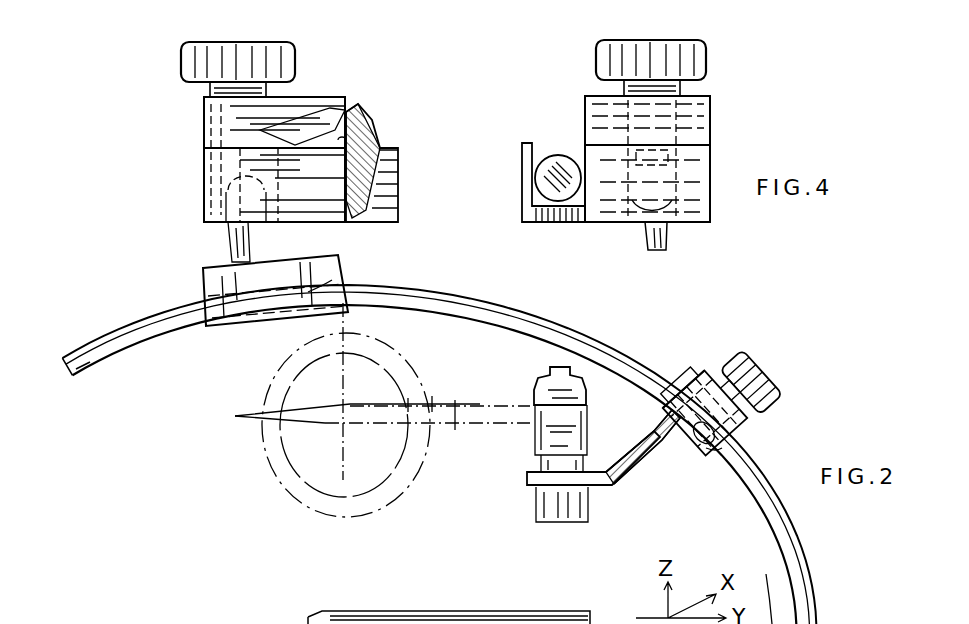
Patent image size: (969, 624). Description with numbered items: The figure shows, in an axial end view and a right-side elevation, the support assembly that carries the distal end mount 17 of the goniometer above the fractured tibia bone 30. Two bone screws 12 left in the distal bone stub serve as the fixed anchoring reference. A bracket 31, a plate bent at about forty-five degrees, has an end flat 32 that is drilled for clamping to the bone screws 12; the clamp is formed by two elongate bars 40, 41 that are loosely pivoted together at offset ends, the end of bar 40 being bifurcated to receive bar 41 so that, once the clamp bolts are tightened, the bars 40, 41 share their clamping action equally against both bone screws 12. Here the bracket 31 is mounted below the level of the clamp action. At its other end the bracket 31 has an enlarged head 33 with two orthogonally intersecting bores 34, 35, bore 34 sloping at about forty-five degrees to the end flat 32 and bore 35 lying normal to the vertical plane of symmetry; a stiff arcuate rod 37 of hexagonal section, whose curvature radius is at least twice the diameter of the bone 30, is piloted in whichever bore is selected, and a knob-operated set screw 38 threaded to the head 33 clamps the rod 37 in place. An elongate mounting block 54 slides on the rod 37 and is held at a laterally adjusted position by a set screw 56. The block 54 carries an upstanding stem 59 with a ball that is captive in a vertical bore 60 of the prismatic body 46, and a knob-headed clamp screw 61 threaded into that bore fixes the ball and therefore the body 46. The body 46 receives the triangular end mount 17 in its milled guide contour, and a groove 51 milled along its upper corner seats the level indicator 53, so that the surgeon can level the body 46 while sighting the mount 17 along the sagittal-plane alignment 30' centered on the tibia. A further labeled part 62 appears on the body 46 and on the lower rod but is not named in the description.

In FIG. 2, the laser beam 12 is at (456, 400).
In FIG. 2, the mirror 17 is at (366, 118).
In FIG. 2, the circular pattern 30 is at (346, 410).
In FIG. 2, the circular pattern 30' is at (296, 339).
In FIG. 2, the support arm 31 is at (656, 460).
In FIG. 2, the nut 32 is at (528, 490).
In FIG. 2, the clamp 33 is at (682, 372).
In FIG. 2, the clamp body 34 is at (676, 380).
In FIG. 2, the clamp jaw 35 is at (724, 447).
In FIG. 2, the ring rim 37 is at (788, 566).
In FIG. 2, the thumb screw 38 is at (762, 382).
In FIG. 2, the bolt 40 is at (540, 444).
In FIG. 2, the knob 41 is at (536, 396).
In FIG. 2, the mirror housing 46 is at (194, 196).
In FIG. 4, the mirror housing 46 is at (722, 168).
In FIG. 2, the pivot 51 is at (266, 214).
In FIG. 4, the pivot pin 53 is at (550, 158).
In FIG. 2, the mounting block 54 is at (200, 280).
In FIG. 2, the groove 56 is at (334, 266).
In FIG. 2, the stem 59 is at (252, 246).
In FIG. 4, the stem 59 is at (670, 248).
In FIG. 2, the rod 60 is at (336, 614).
In FIG. 2, the adjustment knob 61 is at (262, 45).
In FIG. 4, the adjustment knob 61 is at (632, 44).
In FIG. 2, the screw 62 is at (308, 112).